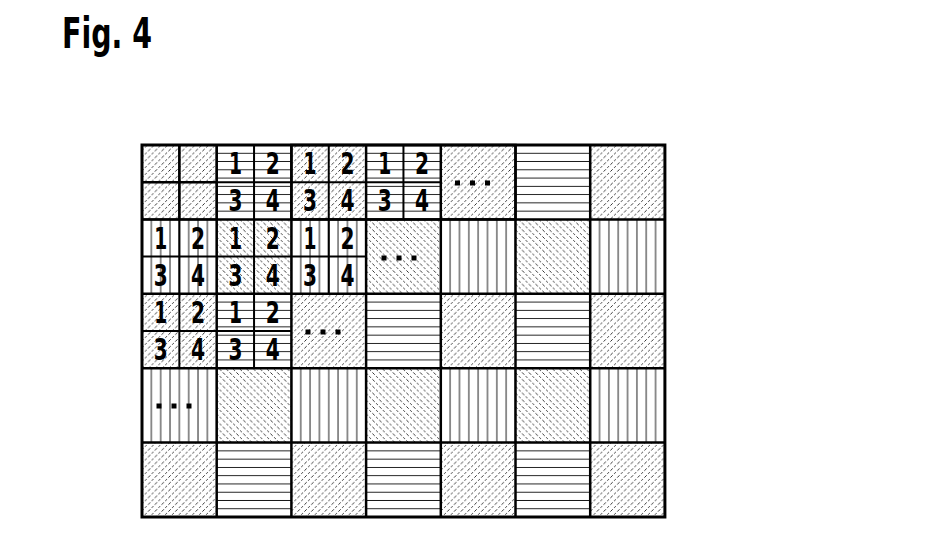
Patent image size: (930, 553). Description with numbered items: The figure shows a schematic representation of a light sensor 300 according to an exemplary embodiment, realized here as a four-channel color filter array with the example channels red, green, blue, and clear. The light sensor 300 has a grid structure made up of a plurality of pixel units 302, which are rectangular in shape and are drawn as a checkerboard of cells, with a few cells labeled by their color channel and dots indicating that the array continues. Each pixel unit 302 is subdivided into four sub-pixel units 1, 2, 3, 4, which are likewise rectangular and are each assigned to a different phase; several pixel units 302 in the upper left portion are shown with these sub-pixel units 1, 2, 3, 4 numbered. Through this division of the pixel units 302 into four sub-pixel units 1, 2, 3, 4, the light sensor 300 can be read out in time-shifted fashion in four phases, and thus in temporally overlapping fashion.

The light sensor 300 is at (462, 285).
The pixel unit 302 is at (477, 137).
The sub-pixel unit 1 is at (160, 163).
The sub-pixel unit 2 is at (197, 163).
The sub-pixel unit 3 is at (160, 200).
The sub-pixel unit 4 is at (197, 200).